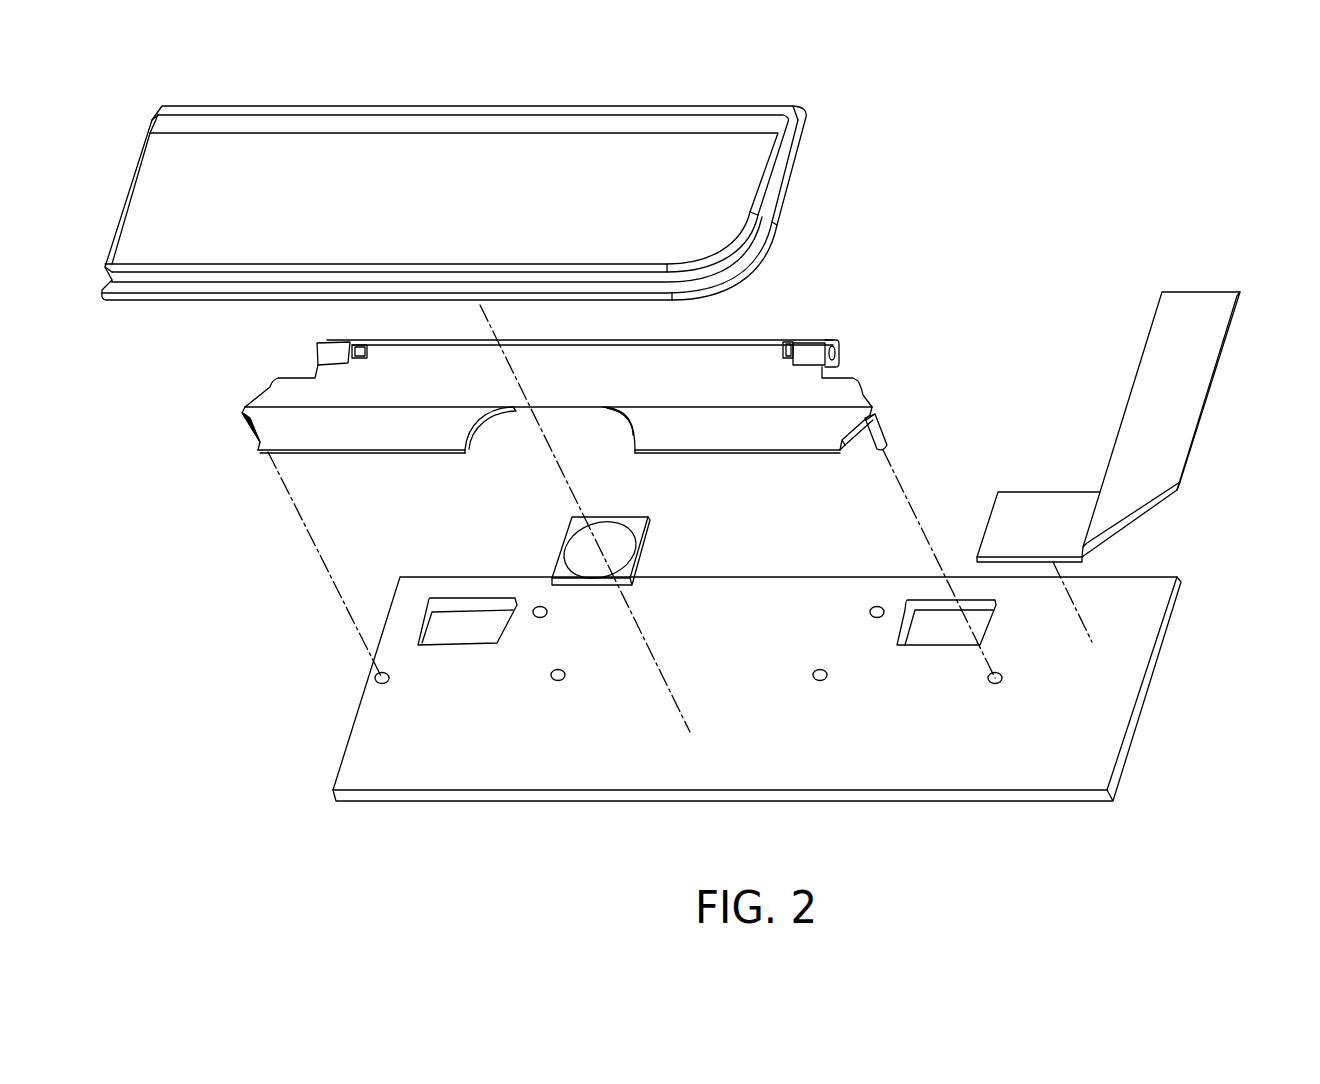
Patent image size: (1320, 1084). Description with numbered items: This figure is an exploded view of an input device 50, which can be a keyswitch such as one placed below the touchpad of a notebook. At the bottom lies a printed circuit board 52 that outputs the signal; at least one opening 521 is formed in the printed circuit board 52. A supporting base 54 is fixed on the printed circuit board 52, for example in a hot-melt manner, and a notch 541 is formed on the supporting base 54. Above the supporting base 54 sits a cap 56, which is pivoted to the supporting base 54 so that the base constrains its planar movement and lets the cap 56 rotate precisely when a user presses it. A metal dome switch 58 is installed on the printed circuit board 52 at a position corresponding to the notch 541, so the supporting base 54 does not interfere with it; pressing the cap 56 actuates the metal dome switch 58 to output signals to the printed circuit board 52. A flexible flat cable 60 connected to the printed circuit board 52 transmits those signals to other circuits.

The input device 50 is at (1083, 203).
The printed circuit board 52 is at (1170, 667).
The opening 521 is at (463, 623).
The supporting base 54 is at (905, 436).
The notch 541 is at (516, 447).
The cap 56 is at (822, 161).
The metal dome switch 58 is at (643, 543).
The flexible flat cable 60 is at (1195, 402).